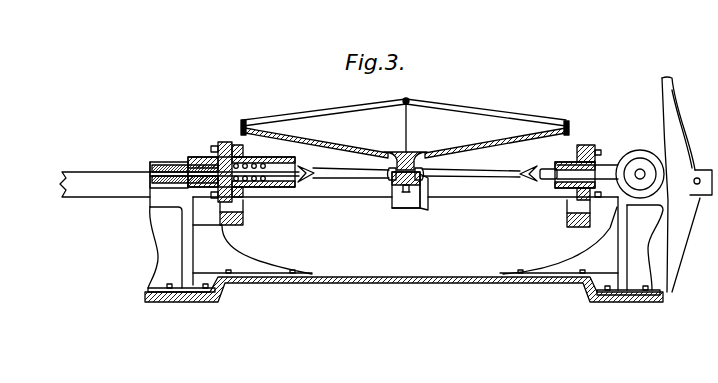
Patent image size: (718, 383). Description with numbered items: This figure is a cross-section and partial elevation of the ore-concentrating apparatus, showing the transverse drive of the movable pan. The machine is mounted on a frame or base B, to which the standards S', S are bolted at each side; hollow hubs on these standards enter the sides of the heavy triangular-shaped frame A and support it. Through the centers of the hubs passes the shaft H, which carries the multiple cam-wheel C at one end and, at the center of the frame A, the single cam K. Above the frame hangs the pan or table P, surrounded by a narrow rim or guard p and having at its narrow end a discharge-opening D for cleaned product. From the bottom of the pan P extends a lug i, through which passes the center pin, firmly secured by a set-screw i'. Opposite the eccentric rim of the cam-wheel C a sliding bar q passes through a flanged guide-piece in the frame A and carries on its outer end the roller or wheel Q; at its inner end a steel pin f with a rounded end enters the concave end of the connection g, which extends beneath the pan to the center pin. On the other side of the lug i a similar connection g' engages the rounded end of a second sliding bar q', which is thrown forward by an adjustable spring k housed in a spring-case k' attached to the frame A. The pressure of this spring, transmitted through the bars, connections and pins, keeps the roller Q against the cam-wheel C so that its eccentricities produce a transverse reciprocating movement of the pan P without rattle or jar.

The frame or base B is at (404, 289).
The standard S' is at (230, 244).
The standard S is at (581, 246).
The multiple cam-wheel C is at (687, 184).
The shaft H is at (262, 184).
The adjustable spring k is at (265, 171).
The spring-case k' is at (260, 168).
The triangular-shaped frame A is at (237, 222).
The pan or table P is at (404, 128).
The rim or guard p is at (243, 122).
The discharge-opening D is at (404, 102).
The lug i is at (405, 175).
The set-screw i' is at (410, 191).
The single cam K is at (404, 209).
The connection g' is at (351, 182).
The sliding bar q' is at (306, 182).
The connection g is at (471, 164).
The sliding bar q is at (533, 182).
The steel pin f is at (541, 170).
The roller or wheel Q is at (640, 168).